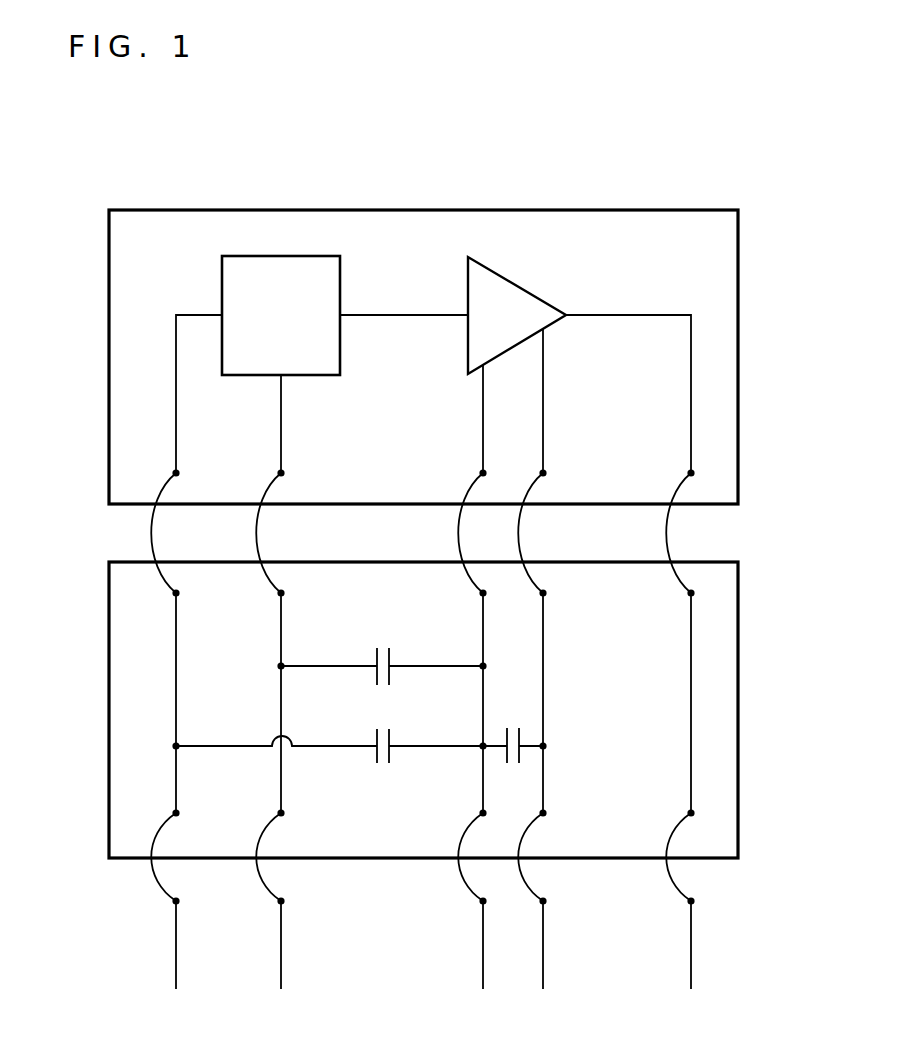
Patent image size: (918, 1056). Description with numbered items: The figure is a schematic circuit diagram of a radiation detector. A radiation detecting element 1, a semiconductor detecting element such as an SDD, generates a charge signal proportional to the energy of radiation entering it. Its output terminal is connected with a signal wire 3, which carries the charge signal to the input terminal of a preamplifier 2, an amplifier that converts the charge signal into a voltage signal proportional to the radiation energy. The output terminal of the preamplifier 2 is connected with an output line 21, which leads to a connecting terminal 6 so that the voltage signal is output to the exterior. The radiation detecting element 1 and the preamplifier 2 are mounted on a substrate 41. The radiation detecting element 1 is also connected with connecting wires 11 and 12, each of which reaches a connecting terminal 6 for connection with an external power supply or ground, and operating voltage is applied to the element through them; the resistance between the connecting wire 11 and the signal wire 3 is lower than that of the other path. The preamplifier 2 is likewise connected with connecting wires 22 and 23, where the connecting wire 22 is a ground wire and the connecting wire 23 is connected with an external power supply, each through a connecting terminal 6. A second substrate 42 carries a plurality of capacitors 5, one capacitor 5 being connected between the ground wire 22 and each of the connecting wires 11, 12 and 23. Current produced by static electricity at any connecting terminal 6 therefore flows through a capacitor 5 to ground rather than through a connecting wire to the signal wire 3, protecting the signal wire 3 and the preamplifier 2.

The radiation detecting element 1 is at (285, 270).
The preamplifier 2 is at (519, 293).
The signal wire 3 is at (404, 314).
The capacitor 5 is at (385, 645).
The connecting terminal 6 is at (176, 958).
The connecting wire 11 is at (282, 430).
The connecting wire 12 is at (176, 430).
The output line 21 is at (691, 388).
The connecting wire 22 is at (483, 424).
The connecting wire 23 is at (543, 398).
The substrate 41 is at (724, 258).
The substrate 42 is at (725, 662).